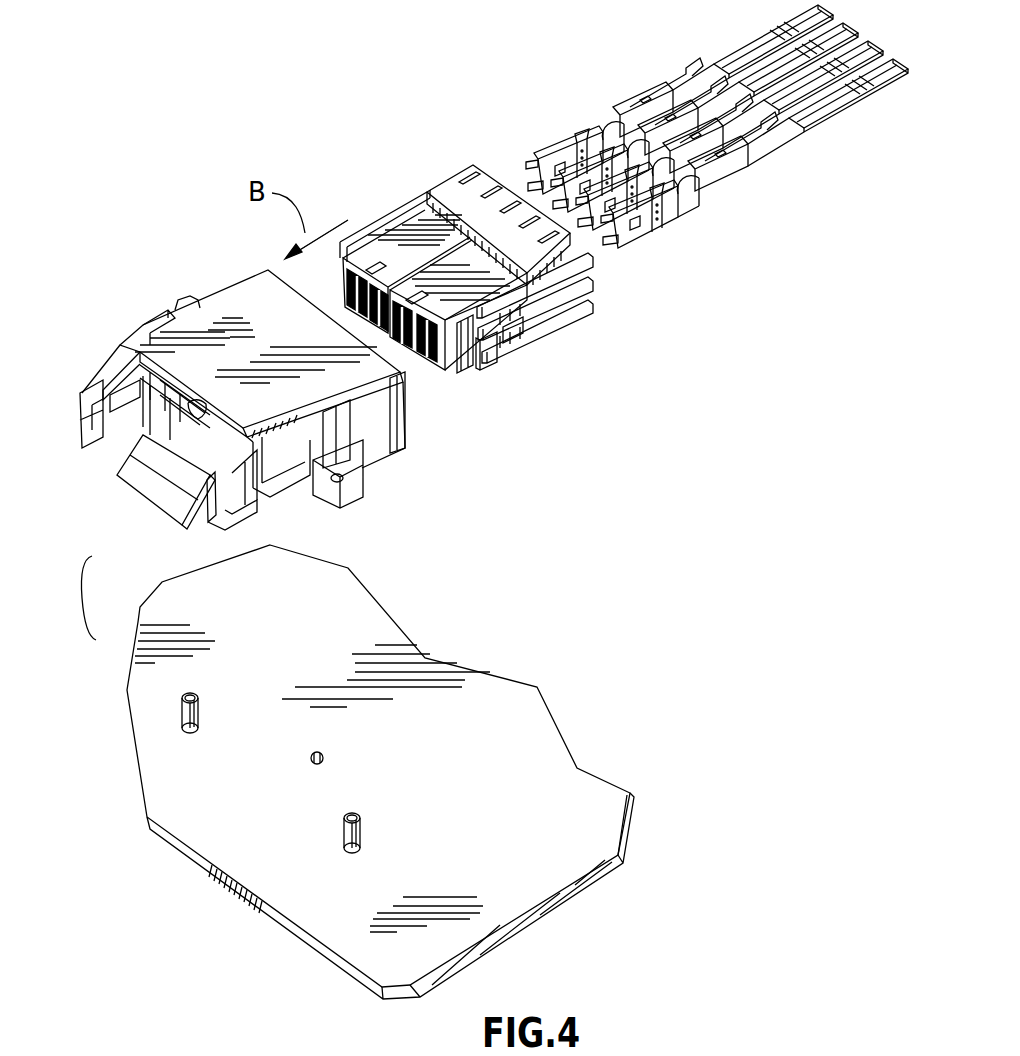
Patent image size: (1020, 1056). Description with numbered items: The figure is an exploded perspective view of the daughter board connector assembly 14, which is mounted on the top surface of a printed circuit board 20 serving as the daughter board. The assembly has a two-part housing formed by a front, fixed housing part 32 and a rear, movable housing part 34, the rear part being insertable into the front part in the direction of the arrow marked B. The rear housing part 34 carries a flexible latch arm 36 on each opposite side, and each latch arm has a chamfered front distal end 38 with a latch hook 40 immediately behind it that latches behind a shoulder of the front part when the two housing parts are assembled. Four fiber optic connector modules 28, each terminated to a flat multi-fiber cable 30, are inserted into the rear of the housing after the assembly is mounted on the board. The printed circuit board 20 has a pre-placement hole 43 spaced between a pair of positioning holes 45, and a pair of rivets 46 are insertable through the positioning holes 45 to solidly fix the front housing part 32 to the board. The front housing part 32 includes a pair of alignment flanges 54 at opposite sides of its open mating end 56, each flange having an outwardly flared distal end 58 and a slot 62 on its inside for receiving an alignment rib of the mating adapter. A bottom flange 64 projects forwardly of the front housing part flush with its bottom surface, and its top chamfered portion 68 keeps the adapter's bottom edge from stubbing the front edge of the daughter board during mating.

The daughter board connector assembly 14 is at (352, 207).
The printed circuit board 20 is at (543, 873).
The fiber optic connector modules 28 is at (605, 111).
The flat multi-fiber cable 30 is at (773, 72).
The front fixed housing part 32 is at (245, 307).
The rear movable housing part 34 is at (453, 197).
The flexible latch arm 36 is at (512, 333).
The chamfered front distal end 38 is at (490, 350).
The latch hook 40 is at (515, 347).
The pre-placement hole 43 is at (324, 757).
The positioning holes 45 is at (200, 720).
The rivets 46 is at (183, 720).
The alignment flanges 54 is at (105, 387).
The open mating end 56 is at (192, 408).
The flared distal end 58 is at (88, 407).
The slots 62 is at (130, 420).
The bottom flange 64 is at (170, 470).
The top chamfered portion 68 is at (167, 497).